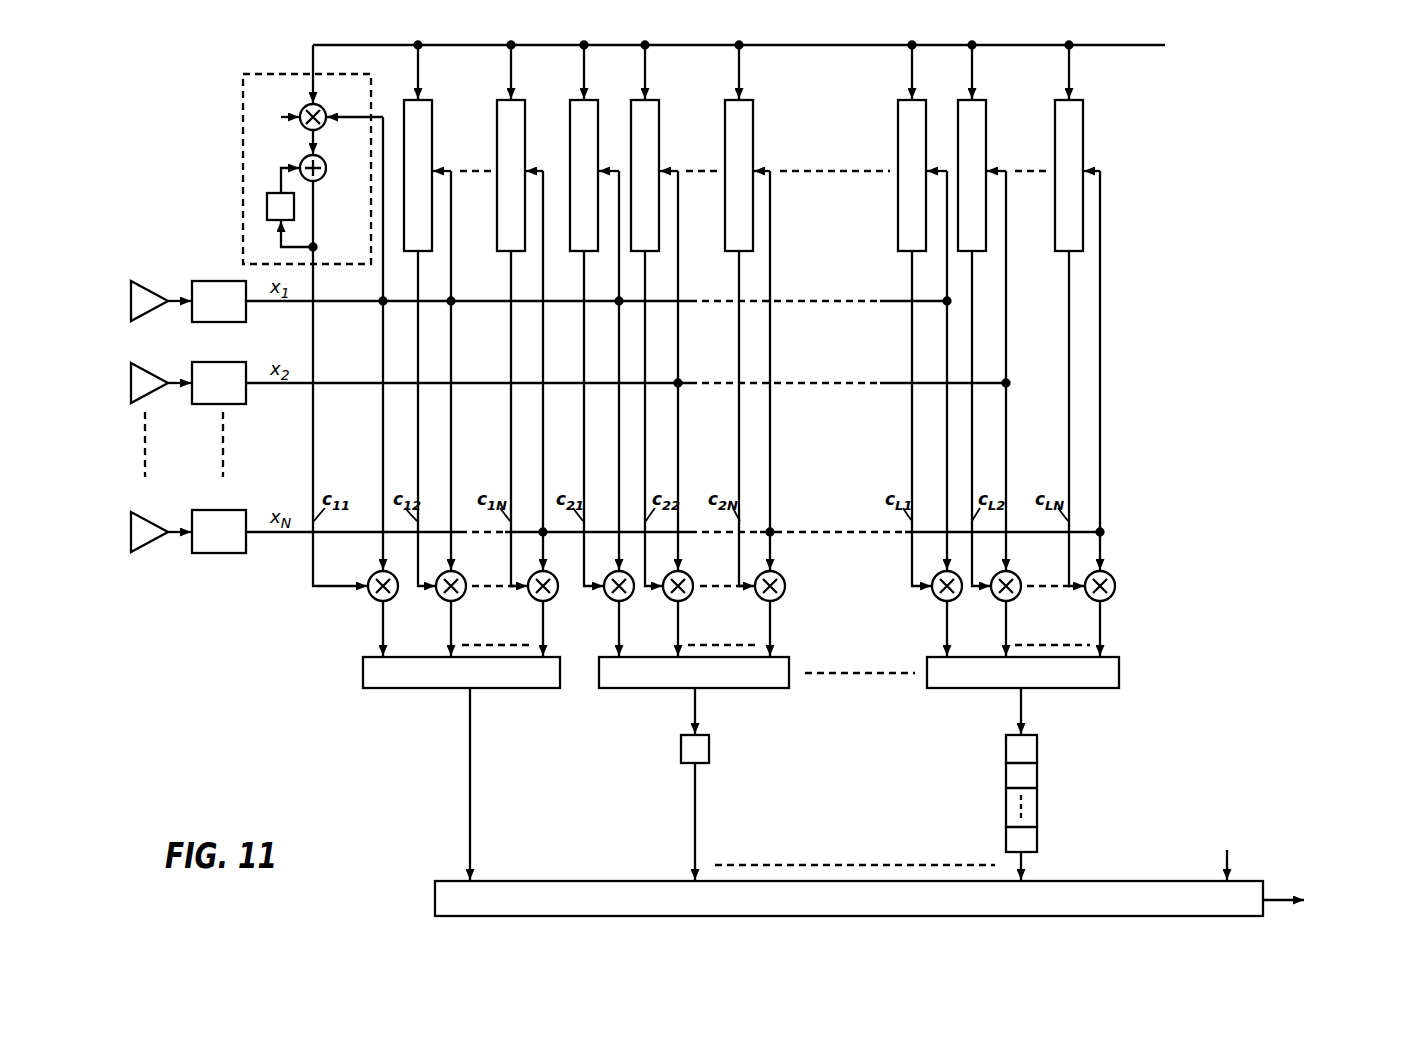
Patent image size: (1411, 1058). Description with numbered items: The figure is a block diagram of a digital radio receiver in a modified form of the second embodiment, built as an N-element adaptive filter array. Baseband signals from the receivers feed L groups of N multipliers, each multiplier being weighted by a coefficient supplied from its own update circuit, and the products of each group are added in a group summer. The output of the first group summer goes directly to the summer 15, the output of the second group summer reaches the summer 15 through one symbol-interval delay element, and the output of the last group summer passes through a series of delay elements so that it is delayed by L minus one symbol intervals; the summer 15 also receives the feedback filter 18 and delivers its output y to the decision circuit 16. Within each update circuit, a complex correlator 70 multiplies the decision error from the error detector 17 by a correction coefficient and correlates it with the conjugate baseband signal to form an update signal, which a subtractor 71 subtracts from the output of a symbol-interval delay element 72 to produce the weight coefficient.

The summer 15 is at (560, 881).
The decision circuit 16 is at (1331, 874).
The error detector 17 is at (1242, 57).
The feedback filter 18 is at (1220, 828).
The complex correlator 70 is at (323, 127).
The subtractor 71 is at (323, 178).
The symbol-interval delay element 72 is at (273, 189).